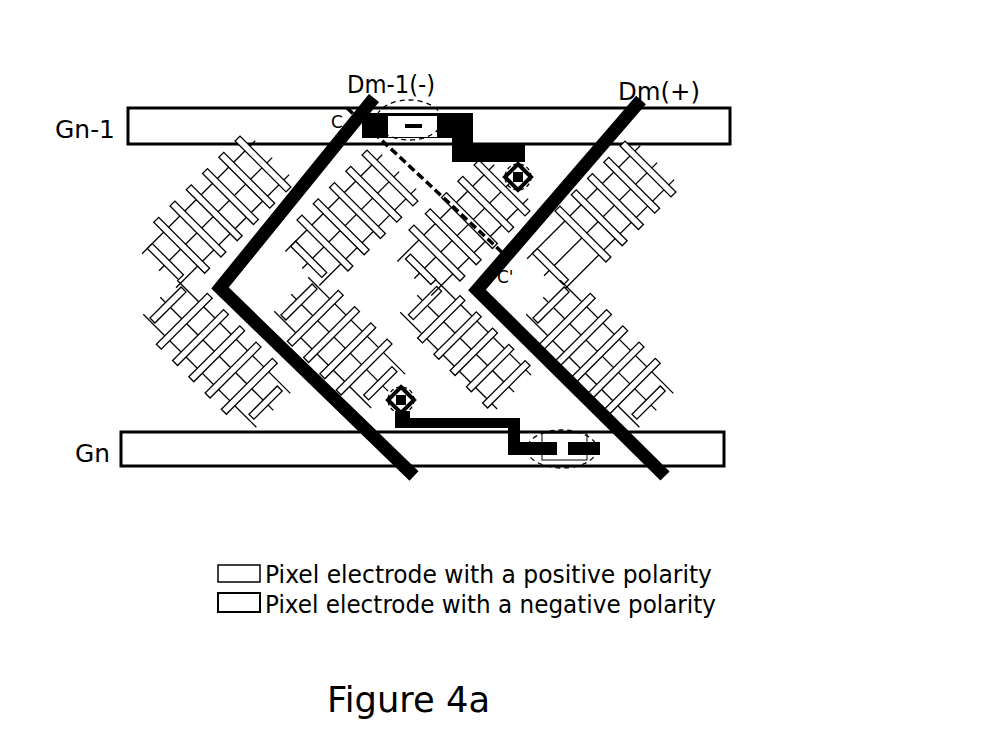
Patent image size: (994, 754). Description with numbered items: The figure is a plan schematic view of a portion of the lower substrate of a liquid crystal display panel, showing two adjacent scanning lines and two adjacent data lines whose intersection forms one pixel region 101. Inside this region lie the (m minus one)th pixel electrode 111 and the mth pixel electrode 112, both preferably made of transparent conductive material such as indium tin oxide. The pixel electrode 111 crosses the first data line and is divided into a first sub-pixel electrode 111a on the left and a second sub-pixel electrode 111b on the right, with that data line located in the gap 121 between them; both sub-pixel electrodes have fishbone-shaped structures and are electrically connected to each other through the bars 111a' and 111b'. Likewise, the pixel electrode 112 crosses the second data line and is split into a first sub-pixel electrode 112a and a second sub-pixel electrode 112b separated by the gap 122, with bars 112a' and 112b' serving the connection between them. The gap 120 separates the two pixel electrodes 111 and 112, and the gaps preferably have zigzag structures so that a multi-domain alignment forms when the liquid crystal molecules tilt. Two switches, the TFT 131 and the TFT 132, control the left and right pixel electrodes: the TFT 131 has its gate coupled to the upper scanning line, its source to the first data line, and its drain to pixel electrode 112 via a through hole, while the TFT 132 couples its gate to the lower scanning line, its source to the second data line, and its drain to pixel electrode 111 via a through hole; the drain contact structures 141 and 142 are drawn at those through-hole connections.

The pixel region 101 is at (578, 58).
The (m-1)th pixel electrode 111 is at (143, 283).
The first sub-pixel electrode 111a is at (180, 354).
The bar 111a' is at (191, 405).
The second sub-pixel electrode 111b is at (351, 421).
The bar 111b' is at (314, 407).
The mth pixel electrode 112 is at (637, 225).
The first sub-pixel electrode 112a is at (474, 175).
The bar 112a' is at (505, 181).
The second sub-pixel electrode 112b is at (648, 370).
The bar 112b' is at (606, 354).
The gap 120 is at (462, 430).
The gap 121 is at (300, 157).
The gap 122 is at (562, 468).
The TFT 131 is at (445, 112).
The TFT 132 is at (590, 467).
The first drain electrode / contact 141 is at (428, 428).
The second drain electrode / contact 142 is at (542, 143).